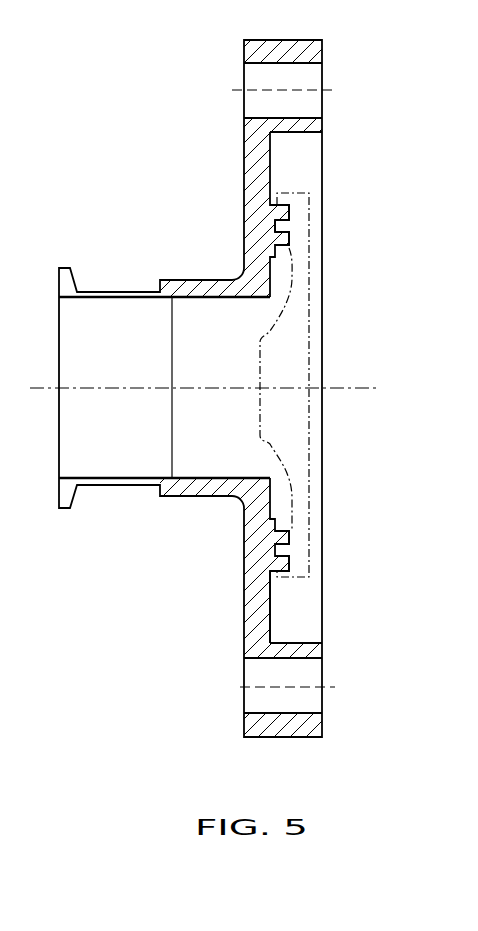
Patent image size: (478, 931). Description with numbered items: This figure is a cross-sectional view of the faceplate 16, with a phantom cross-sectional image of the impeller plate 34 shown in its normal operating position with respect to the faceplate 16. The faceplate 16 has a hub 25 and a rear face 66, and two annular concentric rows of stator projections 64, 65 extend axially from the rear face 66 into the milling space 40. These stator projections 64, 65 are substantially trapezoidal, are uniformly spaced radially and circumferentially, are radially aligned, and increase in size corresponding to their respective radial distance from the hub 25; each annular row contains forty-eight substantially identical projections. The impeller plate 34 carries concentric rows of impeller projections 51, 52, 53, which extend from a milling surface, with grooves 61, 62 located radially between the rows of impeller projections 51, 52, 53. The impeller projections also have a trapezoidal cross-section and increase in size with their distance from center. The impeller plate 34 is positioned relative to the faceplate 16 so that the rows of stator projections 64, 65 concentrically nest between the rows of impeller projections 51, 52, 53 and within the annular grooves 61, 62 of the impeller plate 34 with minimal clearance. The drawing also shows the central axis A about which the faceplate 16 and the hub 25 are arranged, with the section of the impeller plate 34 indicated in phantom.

The faceplate 16 is at (150, 130).
The hub 25 is at (206, 466).
The impeller plate 34 is at (309, 362).
The milling space 40 is at (277, 546).
The impeller projections 51 is at (276, 205).
The impeller projections 52 is at (277, 226).
The impeller projections 53 is at (279, 241).
The groove 61 is at (287, 580).
The groove 62 is at (278, 530).
The stator projections 64 is at (292, 213).
The stator projections 65 is at (292, 242).
The rear face 66 is at (293, 623).
The axis A is at (367, 389).